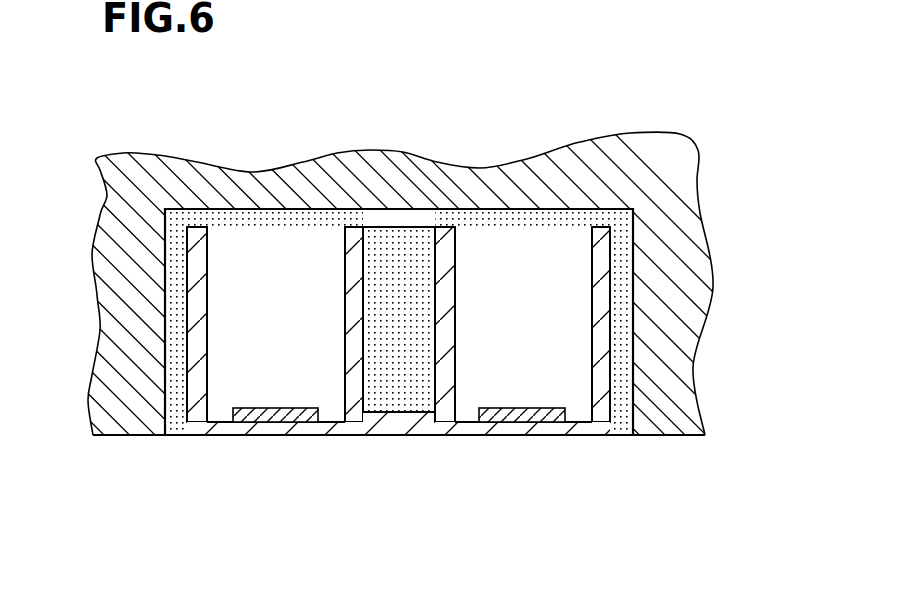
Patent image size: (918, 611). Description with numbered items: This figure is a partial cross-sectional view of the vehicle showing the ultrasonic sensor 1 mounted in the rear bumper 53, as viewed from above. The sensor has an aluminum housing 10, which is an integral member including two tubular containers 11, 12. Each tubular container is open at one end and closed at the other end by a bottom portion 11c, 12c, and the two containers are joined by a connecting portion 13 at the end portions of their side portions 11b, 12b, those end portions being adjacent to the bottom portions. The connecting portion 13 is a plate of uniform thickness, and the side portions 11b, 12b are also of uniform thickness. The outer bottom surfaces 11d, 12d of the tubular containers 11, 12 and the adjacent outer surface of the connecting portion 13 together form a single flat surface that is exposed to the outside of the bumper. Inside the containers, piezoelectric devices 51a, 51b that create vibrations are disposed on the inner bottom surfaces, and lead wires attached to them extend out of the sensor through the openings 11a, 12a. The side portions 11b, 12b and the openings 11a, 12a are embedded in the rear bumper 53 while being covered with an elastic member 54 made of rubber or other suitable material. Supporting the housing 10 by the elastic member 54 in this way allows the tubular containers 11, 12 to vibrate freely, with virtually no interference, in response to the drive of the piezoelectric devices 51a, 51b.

The ultrasonic sensor 1 is at (102, 100).
The housing 10 is at (407, 332).
The tubular container 11 is at (190, 375).
The opening 11a is at (237, 222).
The side portion 11b is at (197, 285).
The bottom portion 11c is at (182, 410).
The outer bottom surface 11d is at (297, 436).
The tubular container 12 is at (616, 375).
The opening 12a is at (573, 222).
The side portion 12b is at (602, 303).
The bottom portion 12c is at (583, 430).
The outer bottom surface 12d is at (496, 430).
The connecting portion 13 is at (397, 445).
The piezoelectric device 51a is at (233, 422).
The piezoelectric device 51b is at (560, 422).
The rear bumper 53 is at (133, 323).
The elastic member 54 is at (407, 303).